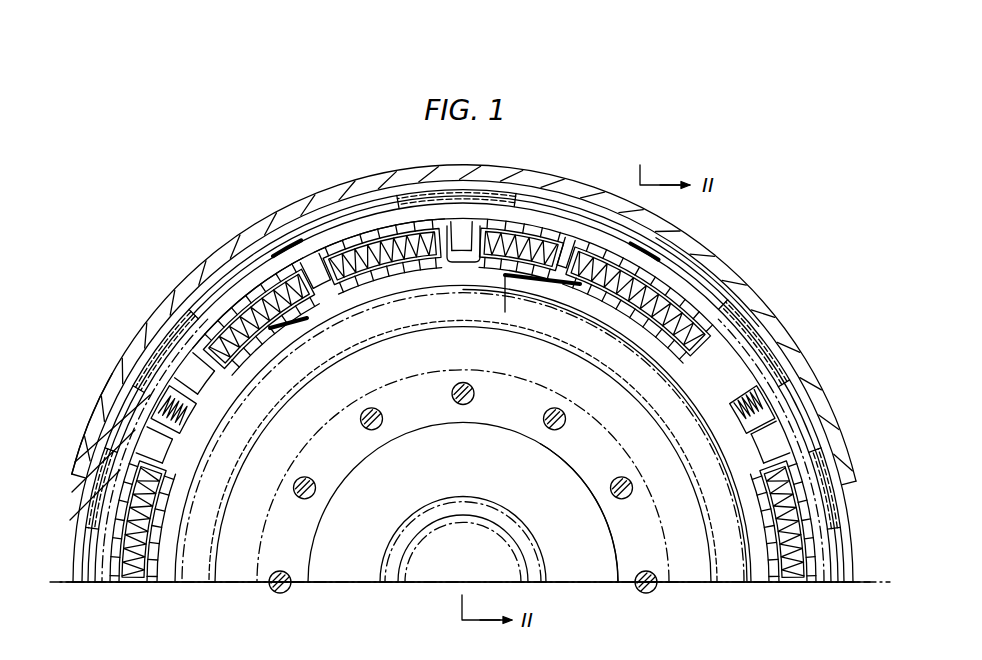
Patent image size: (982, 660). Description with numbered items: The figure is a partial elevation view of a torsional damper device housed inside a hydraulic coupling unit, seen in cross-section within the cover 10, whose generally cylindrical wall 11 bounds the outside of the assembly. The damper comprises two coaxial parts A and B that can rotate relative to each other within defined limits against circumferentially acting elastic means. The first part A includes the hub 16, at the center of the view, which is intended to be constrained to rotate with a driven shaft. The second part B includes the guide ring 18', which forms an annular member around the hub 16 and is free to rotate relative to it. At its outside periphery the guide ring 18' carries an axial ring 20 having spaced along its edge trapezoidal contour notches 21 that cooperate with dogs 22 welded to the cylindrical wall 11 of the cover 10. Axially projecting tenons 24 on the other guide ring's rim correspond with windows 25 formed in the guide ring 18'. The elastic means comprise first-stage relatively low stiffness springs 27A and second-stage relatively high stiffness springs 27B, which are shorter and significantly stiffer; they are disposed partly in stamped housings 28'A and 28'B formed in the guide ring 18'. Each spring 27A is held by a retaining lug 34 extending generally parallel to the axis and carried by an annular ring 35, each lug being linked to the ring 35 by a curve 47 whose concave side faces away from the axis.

The cover 10 is at (333, 190).
The generally cylindrical wall 11 is at (548, 180).
The hub 16 is at (395, 530).
The guide ring 18' is at (141, 365).
The axial ring 20 is at (208, 300).
The trapezoidal contour notches 21 is at (445, 195).
The dogs 22 is at (483, 190).
The axially projecting tenons 24 is at (722, 292).
The windows 25 is at (705, 272).
The relatively low stiffness springs 27A is at (405, 238).
The relatively high stiffness springs 27B is at (165, 405).
The housings 28'A is at (463, 405).
The housings 28'B is at (463, 418).
The retaining lug 34 is at (295, 238).
The ring 35 is at (263, 246).
The curve 47 is at (300, 290).
The first part A is at (480, 546).
The second part B is at (700, 447).